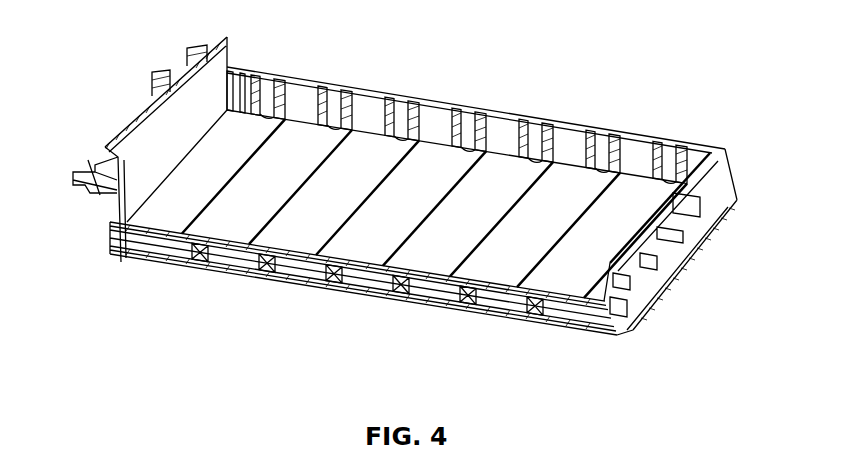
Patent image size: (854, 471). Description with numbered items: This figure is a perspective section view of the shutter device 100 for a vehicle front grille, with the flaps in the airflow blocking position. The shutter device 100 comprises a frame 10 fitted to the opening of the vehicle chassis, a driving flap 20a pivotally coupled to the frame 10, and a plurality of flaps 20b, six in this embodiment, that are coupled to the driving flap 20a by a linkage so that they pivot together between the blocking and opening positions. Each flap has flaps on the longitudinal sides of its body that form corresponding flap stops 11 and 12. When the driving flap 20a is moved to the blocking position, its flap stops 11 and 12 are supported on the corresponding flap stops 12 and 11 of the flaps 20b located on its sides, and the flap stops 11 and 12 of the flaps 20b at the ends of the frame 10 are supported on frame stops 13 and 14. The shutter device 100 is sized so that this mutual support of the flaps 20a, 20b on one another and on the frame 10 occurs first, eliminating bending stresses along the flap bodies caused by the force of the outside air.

The shutter device 100 is at (417, 210).
The frame 10 is at (157, 125).
The flap stop 11 is at (140, 233).
The flap stop 12 is at (448, 280).
The frame stop 13 is at (143, 217).
The frame stop 14 is at (613, 320).
The driving flap 20a is at (493, 182).
The flaps 20b is at (240, 127).